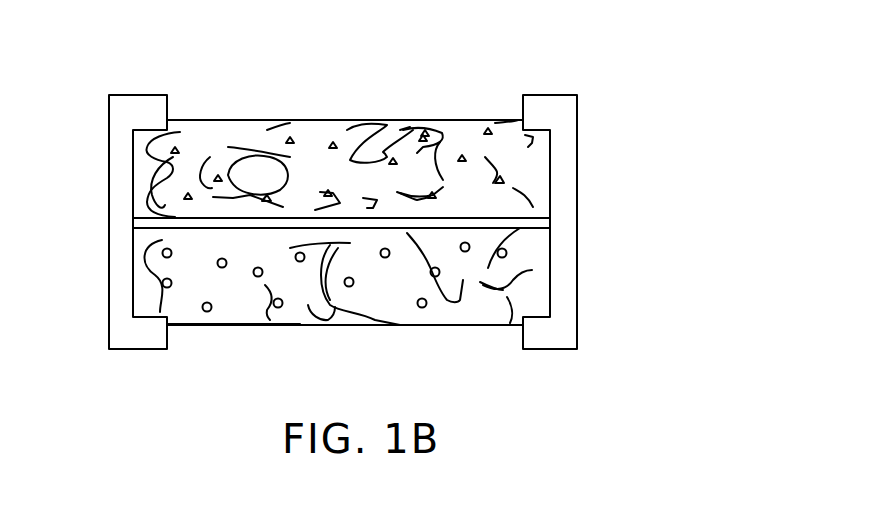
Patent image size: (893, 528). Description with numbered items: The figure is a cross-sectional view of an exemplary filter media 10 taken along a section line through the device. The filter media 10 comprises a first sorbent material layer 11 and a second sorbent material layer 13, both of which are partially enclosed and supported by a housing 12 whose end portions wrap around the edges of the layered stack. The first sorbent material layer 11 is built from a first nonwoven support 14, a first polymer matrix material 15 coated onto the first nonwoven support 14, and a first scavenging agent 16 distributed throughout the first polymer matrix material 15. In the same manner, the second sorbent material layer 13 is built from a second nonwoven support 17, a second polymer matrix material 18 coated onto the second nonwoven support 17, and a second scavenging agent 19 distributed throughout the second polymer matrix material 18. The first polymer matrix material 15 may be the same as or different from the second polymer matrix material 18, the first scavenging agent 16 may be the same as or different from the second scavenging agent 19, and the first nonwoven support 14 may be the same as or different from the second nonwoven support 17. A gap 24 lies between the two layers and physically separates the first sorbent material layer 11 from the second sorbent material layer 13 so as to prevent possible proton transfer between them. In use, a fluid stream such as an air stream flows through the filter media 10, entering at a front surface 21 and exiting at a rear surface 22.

The filter media 10 is at (628, 75).
The first sorbent material layer 11 is at (483, 285).
The housing 12 is at (565, 263).
The second sorbent material layer 13 is at (257, 152).
The first nonwoven support 14 is at (458, 300).
The first polymer matrix material 15 is at (229, 311).
The first scavenging agent 16 is at (202, 306).
The second nonwoven support 17 is at (350, 130).
The second polymer matrix material 18 is at (417, 152).
The second scavenging agent 19 is at (500, 180).
The front surface 21 is at (299, 325).
The rear surface 22 is at (295, 120).
The gap 24 is at (147, 225).